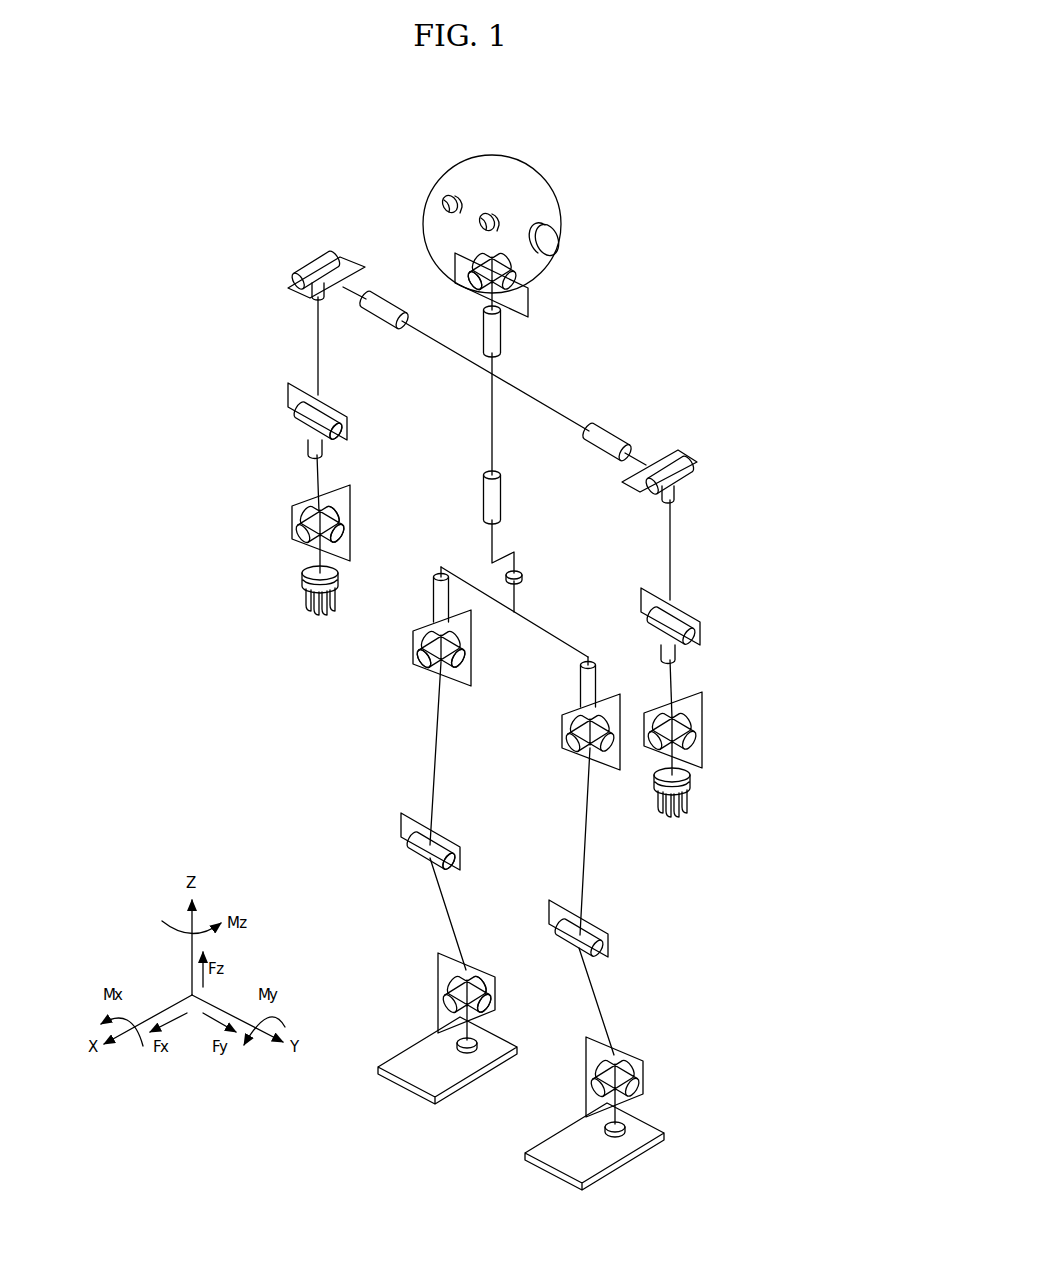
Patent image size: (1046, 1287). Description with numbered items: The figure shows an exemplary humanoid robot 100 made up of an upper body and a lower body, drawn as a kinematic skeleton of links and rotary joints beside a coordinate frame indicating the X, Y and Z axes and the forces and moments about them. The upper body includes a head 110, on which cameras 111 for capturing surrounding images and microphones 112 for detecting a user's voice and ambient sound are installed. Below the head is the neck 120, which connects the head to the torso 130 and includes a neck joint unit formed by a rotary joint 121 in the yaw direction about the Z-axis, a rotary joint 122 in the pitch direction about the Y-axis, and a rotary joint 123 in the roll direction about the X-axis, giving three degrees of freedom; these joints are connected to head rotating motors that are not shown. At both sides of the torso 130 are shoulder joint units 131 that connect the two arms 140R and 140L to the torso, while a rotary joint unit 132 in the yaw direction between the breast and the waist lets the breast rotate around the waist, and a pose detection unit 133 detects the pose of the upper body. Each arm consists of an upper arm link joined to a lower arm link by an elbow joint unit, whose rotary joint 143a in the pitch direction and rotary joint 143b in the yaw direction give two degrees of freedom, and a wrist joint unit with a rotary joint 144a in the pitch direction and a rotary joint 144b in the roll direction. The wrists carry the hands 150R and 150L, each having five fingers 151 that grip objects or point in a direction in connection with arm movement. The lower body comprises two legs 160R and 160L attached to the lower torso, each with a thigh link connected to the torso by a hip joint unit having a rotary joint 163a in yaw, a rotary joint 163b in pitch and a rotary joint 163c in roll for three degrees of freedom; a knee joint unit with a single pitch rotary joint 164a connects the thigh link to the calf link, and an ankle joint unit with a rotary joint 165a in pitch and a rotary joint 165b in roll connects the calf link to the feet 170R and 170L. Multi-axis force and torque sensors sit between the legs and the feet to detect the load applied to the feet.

The robot 100 is at (752, 166).
The head 110 is at (550, 170).
The cameras 111 is at (480, 230).
The microphones 112 is at (556, 242).
The neck 120 is at (511, 305).
The rotary joint in the yaw direction 121 is at (498, 330).
The rotary joint in the pitch direction 122 is at (517, 281).
The rotary joint in the roll direction 123 is at (466, 282).
The torso 130 is at (483, 420).
The shoulder joint units 131 is at (312, 246).
The rotary joint unit in the yaw direction 132 is at (498, 497).
The pose detection unit 133 is at (520, 580).
The right arm 140R is at (274, 435).
The left arm 140L is at (746, 634).
The rotary joint in the pitch direction 143a is at (324, 418).
The rotary joint in the yaw direction 143b is at (328, 447).
The rotary joint in the pitch direction 144a is at (345, 528).
The rotary joint in the roll direction 144b is at (337, 512).
The right hand 150R is at (272, 599).
The left hand 150L is at (708, 797).
The fingers 151 is at (316, 605).
The right leg 160R is at (407, 852).
The left leg 160L is at (619, 934).
The rotary joint in the yaw direction 163a is at (434, 600).
The rotary joint in the pitch direction 163b is at (466, 655).
The rotary joint in the roll direction 163c is at (428, 670).
The rotary joint in the pitch direction 164a is at (438, 852).
The rotary joint in the pitch direction 165a is at (490, 1001).
The rotary joint in the roll direction 165b is at (478, 988).
The right foot 170R is at (408, 1085).
The left foot 170L is at (556, 1168).